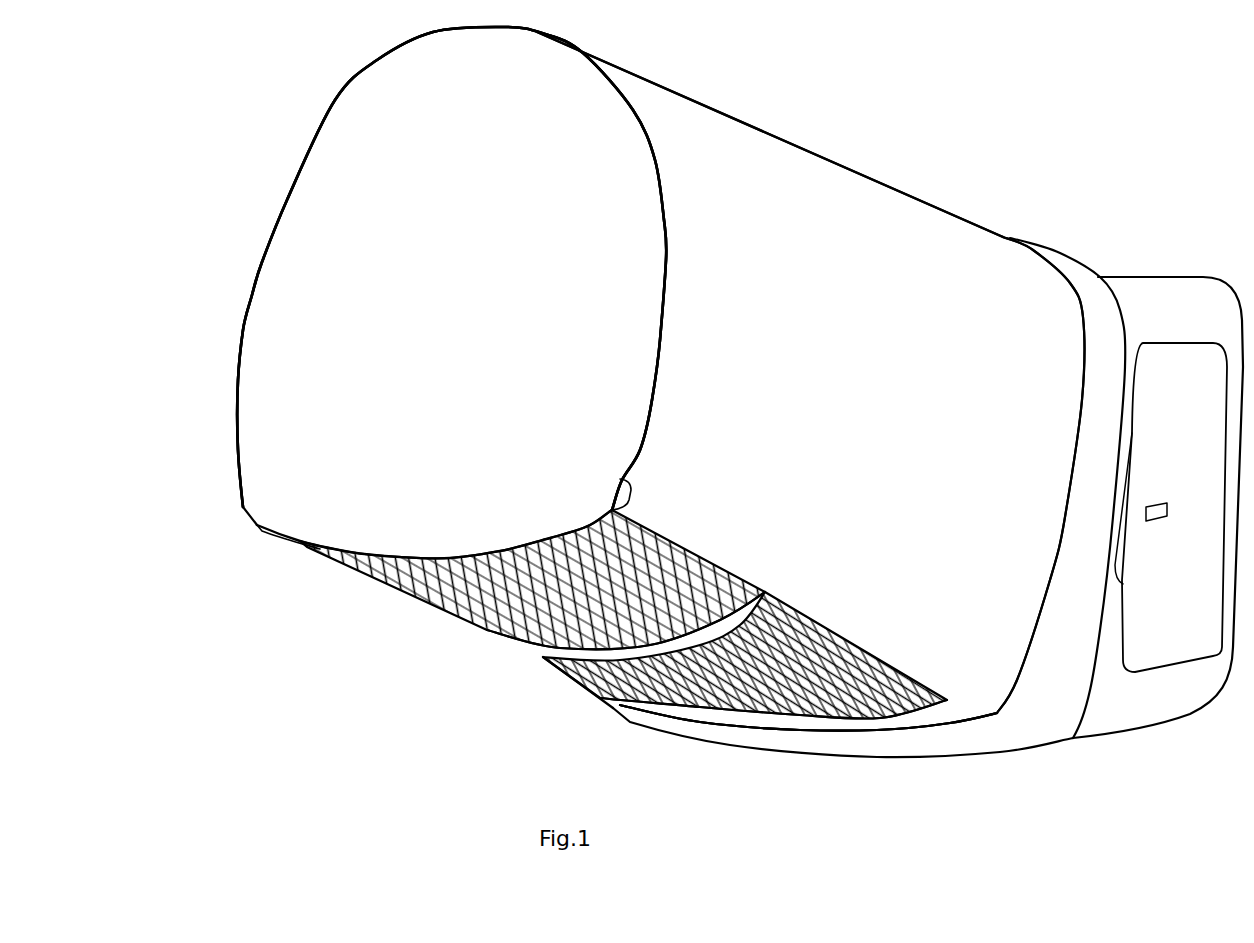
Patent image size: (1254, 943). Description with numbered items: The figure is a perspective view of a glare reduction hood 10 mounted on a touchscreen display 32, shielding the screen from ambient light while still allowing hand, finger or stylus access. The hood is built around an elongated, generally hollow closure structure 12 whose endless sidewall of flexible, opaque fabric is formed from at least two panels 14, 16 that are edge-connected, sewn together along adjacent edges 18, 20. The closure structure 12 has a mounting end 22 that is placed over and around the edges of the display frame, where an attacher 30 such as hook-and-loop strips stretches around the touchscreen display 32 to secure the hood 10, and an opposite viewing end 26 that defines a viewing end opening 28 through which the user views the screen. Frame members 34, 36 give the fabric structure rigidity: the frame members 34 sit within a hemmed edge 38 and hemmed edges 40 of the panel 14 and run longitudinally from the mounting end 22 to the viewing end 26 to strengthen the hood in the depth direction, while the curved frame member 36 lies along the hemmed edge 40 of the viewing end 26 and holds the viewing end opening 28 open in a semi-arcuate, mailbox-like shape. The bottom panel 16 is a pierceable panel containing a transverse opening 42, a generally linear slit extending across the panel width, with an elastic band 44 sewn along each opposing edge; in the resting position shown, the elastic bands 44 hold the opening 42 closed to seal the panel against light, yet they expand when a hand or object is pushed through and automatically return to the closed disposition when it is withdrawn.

The glare reduction hood 10 is at (863, 100).
The closure structure 12 is at (716, 100).
The panel 14 is at (840, 200).
The pierceable panel 16 is at (405, 572).
The adjacent edge 18 is at (805, 617).
The adjacent edge 20 is at (890, 713).
The mounting end 22 is at (1003, 237).
The viewing end 26 is at (315, 550).
The viewing end opening 28 is at (290, 347).
The attacher 30 is at (667, 720).
The touchscreen display 32 is at (1144, 268).
The frame member 34 is at (620, 479).
The frame member 36 is at (297, 193).
The hemmed edge 38 is at (262, 527).
The hemmed edge 40 is at (362, 110).
The transverse opening 42 is at (565, 650).
The elastic band 44 is at (627, 697).